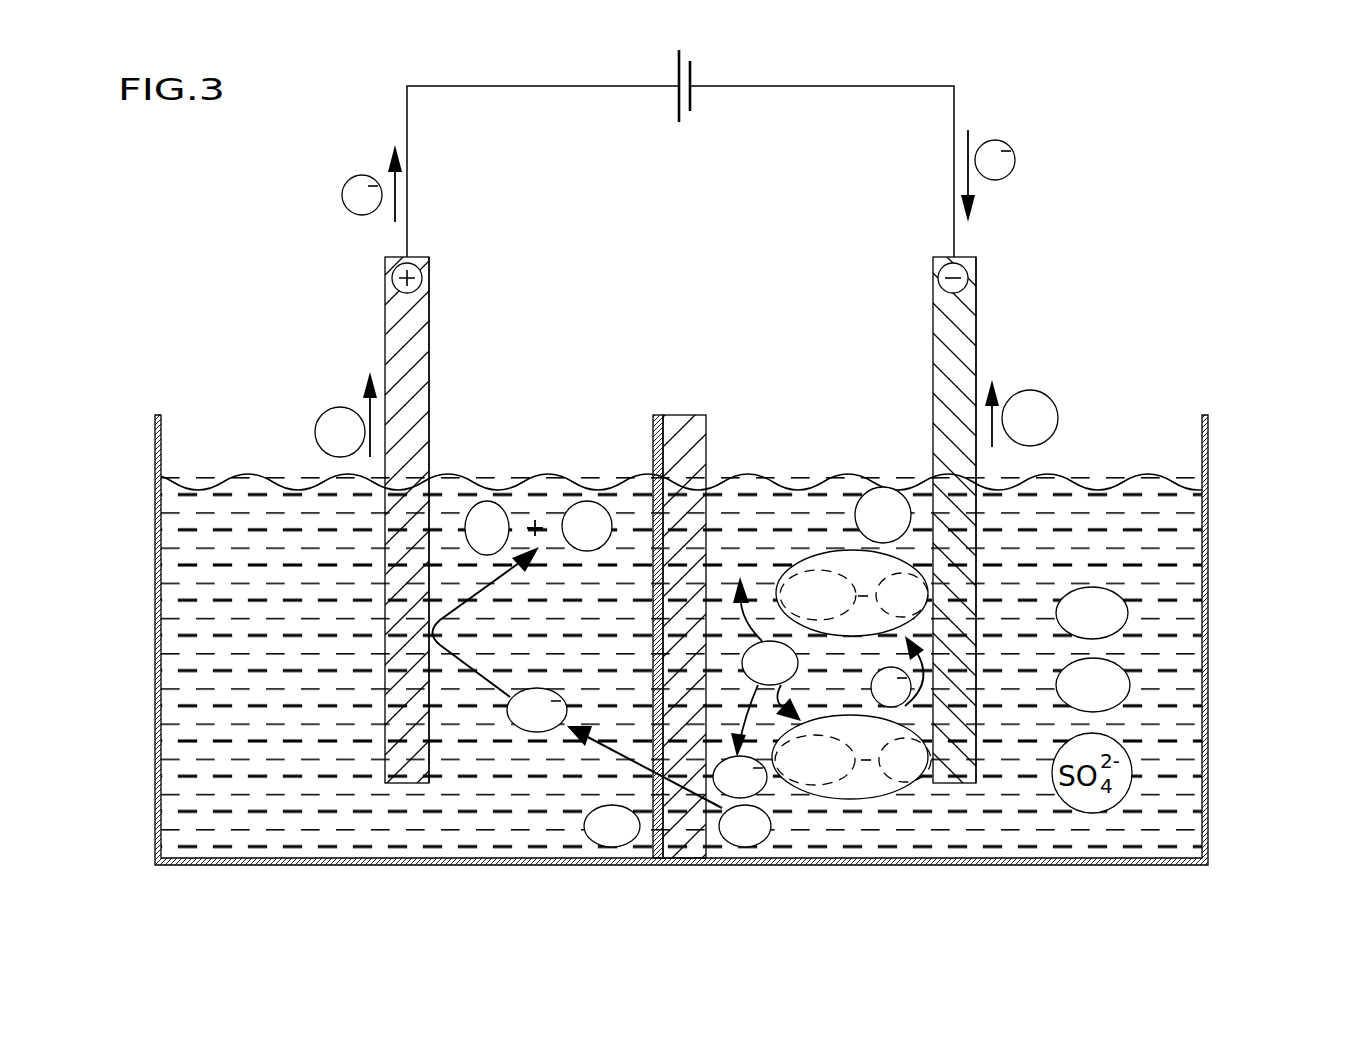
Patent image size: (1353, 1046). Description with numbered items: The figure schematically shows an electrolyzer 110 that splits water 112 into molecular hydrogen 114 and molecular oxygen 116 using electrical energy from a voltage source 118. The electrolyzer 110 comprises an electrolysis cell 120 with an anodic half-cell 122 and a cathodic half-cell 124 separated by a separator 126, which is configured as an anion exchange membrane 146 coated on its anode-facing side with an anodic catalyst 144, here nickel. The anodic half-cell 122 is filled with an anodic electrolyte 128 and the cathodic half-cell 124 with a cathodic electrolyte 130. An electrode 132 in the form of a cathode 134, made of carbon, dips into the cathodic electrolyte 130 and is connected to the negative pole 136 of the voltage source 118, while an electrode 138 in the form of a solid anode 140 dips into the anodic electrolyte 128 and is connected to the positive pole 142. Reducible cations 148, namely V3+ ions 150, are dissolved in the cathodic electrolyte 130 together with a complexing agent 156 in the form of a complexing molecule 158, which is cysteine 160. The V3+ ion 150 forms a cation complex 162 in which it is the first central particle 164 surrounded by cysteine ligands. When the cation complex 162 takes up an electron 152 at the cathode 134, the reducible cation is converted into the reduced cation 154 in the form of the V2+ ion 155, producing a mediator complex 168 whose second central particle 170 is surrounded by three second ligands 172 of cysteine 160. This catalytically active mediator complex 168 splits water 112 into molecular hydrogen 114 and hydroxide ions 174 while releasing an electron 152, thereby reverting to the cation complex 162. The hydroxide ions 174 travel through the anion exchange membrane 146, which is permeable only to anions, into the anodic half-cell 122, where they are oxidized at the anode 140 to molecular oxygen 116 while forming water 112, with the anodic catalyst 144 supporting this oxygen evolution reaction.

The electrolyzer 110 is at (1085, 135).
The water 112 is at (593, 500).
The molecular hydrogen 114 is at (1042, 391).
The molecular oxygen 116 is at (490, 502).
The voltage source 118 is at (680, 129).
The electrolysis cell 120 is at (1232, 450).
The anodic half-cell 122 is at (551, 385).
The cathodic half-cell 124 is at (845, 335).
The separator 126 is at (682, 600).
The anodic electrolyte 128 is at (185, 586).
The cathodic electrolyte 130 is at (1150, 822).
The electrode 132 is at (976, 300).
The cathode 134 is at (976, 322).
The negative pole 136 is at (690, 108).
The electrode 138 is at (392, 295).
The anode 140 is at (392, 345).
The positive pole 142 is at (680, 113).
The anodic catalyst 144 is at (660, 414).
The anion exchange membrane 146 is at (685, 845).
The reducible cations 148 is at (1179, 707).
The V3+ ion 150 is at (1128, 672).
The electron 152 is at (871, 688).
The reduced cation 154 is at (851, 495).
The V2+ ion 155 is at (851, 495).
The complexing agent 156 is at (1106, 696).
The complexing molecule 158 is at (1106, 696).
The cysteine 160 is at (1115, 594).
The cation complex 162 is at (931, 820).
The first central particle 164 is at (820, 800).
The mediator complex 168 is at (775, 555).
The second central particle 170 is at (795, 550).
The second ligands 172 is at (925, 556).
The hydroxide ions 174 is at (535, 688).